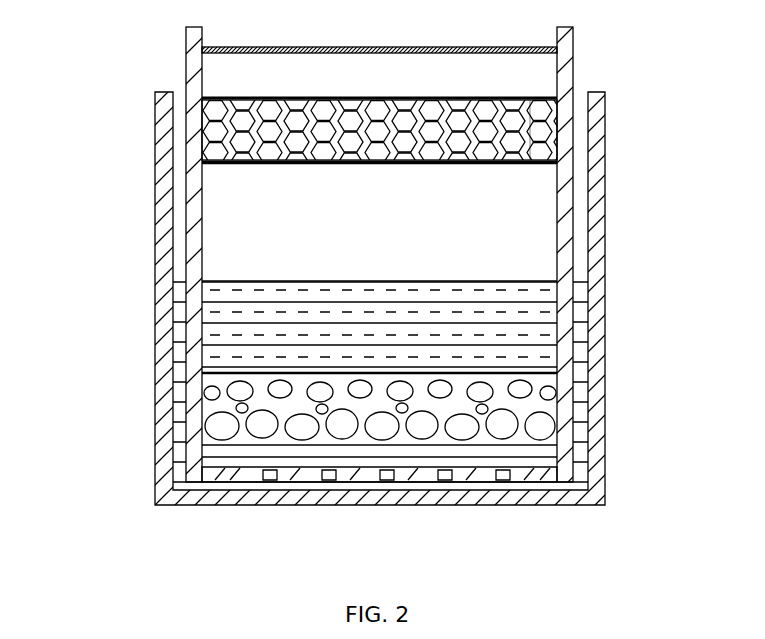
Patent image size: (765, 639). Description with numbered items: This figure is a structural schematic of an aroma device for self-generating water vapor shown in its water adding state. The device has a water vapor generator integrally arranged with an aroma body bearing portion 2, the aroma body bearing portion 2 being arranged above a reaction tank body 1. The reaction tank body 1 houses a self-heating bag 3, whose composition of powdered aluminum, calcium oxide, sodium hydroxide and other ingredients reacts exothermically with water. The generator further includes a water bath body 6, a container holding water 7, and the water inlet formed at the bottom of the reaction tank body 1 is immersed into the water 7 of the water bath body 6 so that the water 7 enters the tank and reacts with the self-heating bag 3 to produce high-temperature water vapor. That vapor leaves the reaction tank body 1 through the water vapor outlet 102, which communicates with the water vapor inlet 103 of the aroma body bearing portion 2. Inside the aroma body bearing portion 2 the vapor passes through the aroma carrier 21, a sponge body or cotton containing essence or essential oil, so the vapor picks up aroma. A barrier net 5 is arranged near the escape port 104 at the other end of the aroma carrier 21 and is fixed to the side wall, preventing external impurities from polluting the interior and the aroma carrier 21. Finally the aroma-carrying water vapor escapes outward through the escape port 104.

The reaction tank body 1 is at (192, 280).
The aroma body bearing portion 2 is at (200, 128).
The self-heating bag 3 is at (233, 415).
The barrier net 5 is at (200, 50).
The water bath body 6 is at (160, 480).
The water 7 is at (212, 357).
The aroma carrier 21 is at (533, 135).
The water vapor outlet 102 is at (502, 262).
The water vapor inlet 103 is at (487, 168).
The escape port 104 is at (527, 90).